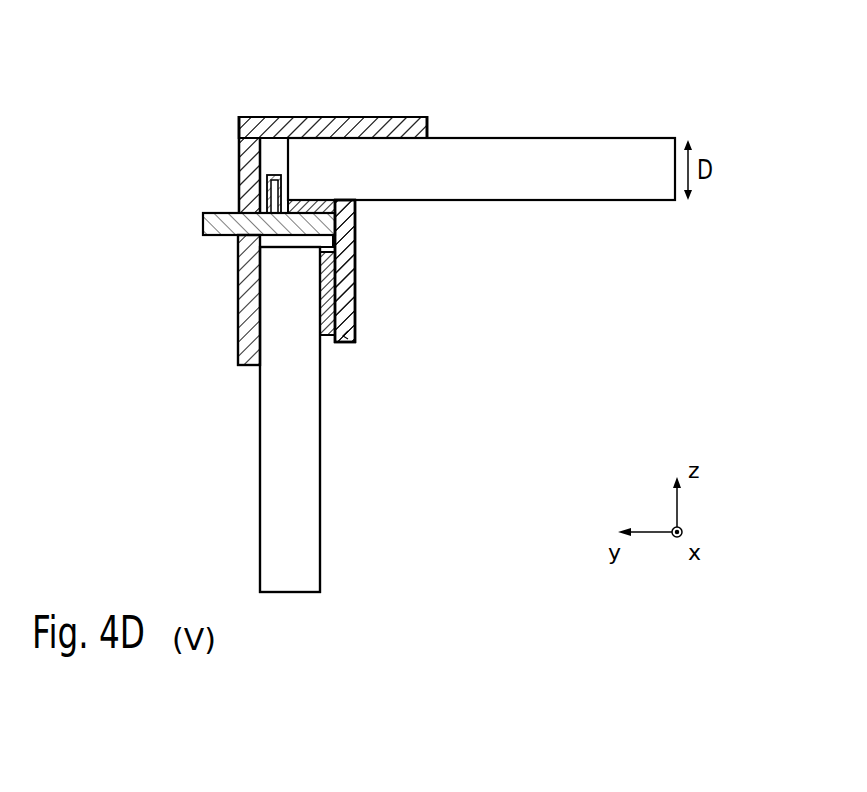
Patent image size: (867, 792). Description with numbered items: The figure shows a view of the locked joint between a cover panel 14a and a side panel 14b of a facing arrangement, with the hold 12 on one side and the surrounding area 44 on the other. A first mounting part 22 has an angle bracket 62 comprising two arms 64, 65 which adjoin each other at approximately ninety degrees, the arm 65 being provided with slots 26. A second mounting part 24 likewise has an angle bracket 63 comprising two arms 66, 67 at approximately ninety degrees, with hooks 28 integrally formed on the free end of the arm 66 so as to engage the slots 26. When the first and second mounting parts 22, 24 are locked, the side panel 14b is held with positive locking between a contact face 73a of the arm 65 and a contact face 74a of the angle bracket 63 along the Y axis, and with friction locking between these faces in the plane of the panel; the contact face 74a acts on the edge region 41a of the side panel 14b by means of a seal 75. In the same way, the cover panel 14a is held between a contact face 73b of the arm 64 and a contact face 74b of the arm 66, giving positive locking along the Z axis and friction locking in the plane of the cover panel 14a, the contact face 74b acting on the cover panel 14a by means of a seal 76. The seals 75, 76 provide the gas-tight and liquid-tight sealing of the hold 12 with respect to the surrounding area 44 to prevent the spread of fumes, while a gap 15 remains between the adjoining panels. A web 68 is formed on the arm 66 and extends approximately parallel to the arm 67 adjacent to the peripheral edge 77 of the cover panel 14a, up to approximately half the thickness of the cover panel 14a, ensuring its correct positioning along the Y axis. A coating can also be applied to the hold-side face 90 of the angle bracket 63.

The angle bracket 62 is at (273, 107).
The first mounting part 22 is at (371, 107).
The contact face 73b is at (335, 117).
The arm 64 is at (409, 117).
The peripheral edge 77 is at (283, 157).
The slots 26 is at (238, 202).
The cover panel 14a is at (605, 153).
The seal 76 is at (313, 193).
The contact face 74b is at (357, 204).
The web 68 is at (270, 190).
The hooks 28 is at (205, 225).
The gap 15 is at (262, 243).
The arm 65 is at (240, 289).
The contact face 73a is at (264, 348).
The seal 75 is at (355, 278).
The contact face 74a is at (320, 322).
The second mounting part 24 is at (368, 290).
The arm 66 is at (357, 243).
The hold-side face 90 is at (358, 308).
The angle bracket 63 is at (368, 340).
The arm 67 is at (351, 344).
The side panel 14b is at (305, 540).
The edge region 41a is at (308, 288).
The hold 12 is at (539, 334).
The surrounding area 44 is at (98, 271).